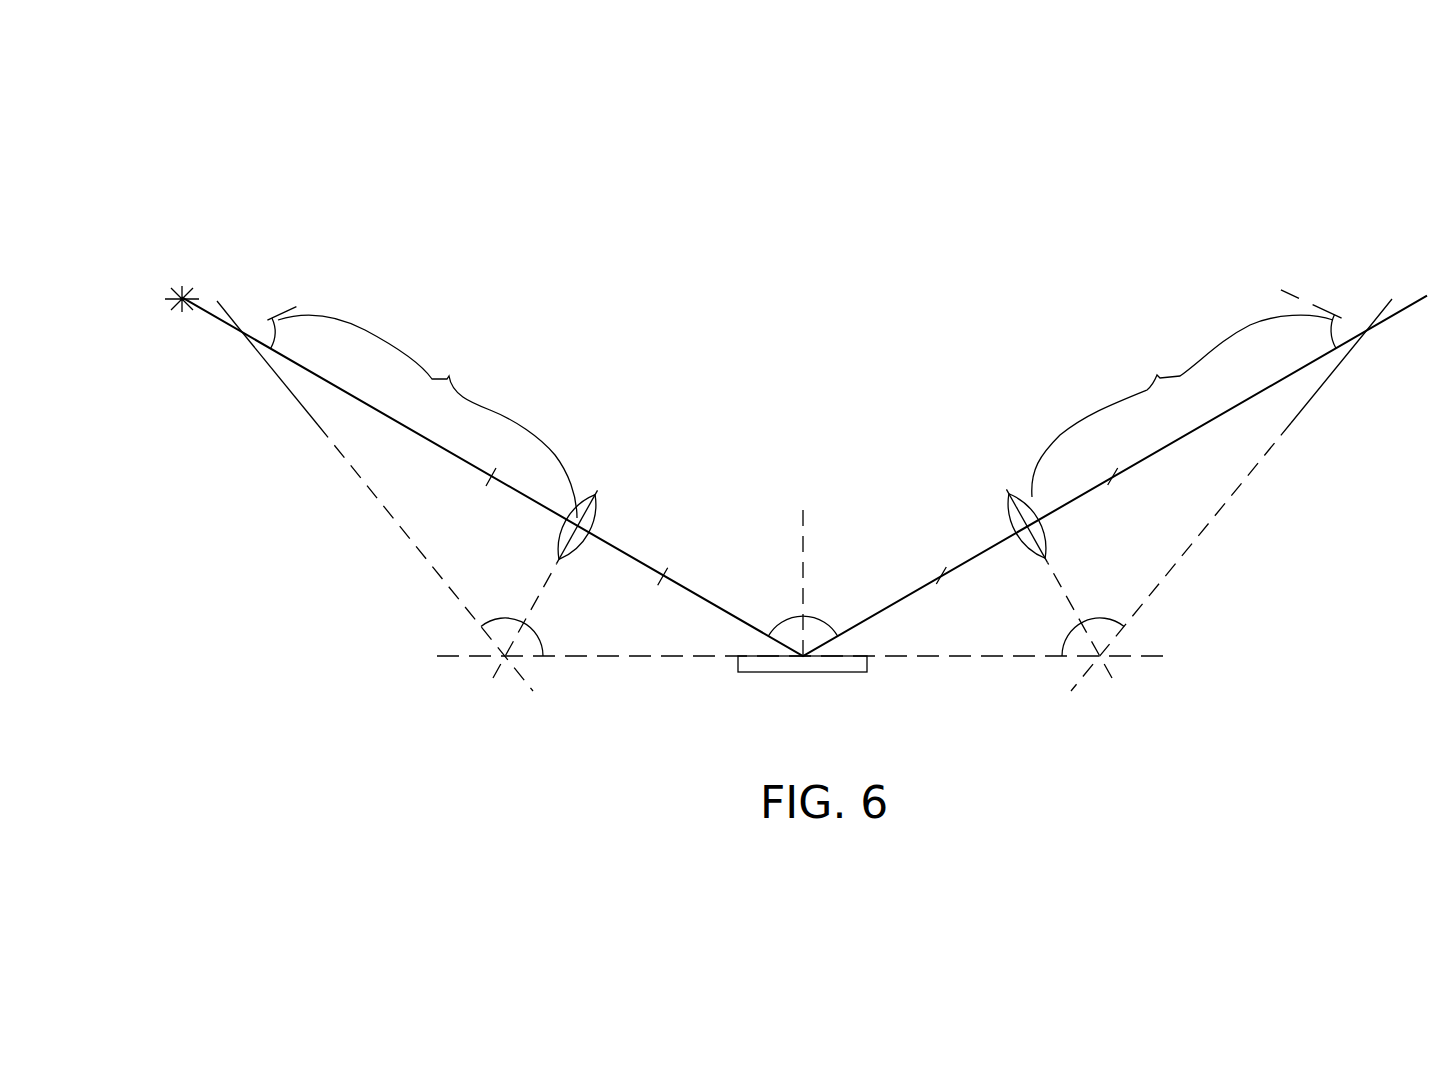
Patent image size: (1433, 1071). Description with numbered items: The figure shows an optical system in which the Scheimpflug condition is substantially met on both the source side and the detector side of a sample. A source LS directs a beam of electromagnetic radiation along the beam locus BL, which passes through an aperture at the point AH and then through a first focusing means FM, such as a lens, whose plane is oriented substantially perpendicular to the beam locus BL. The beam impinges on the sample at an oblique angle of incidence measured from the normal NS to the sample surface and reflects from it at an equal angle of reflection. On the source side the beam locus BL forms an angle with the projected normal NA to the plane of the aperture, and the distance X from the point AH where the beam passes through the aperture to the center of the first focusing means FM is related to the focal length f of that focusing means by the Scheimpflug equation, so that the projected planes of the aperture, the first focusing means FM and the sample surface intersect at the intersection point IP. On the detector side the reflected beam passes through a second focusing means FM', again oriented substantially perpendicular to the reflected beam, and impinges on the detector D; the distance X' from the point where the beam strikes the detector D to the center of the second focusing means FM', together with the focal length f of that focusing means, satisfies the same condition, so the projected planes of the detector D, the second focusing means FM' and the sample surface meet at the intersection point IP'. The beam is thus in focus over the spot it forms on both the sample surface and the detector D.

The source LS is at (184, 278).
The projected normal to the plane of the aperture NA is at (313, 300).
The beam of electromagnetic radiation BL is at (218, 322).
The aperture / beam vertex AH is at (237, 345).
The distance X is at (427, 416).
The focusing means FM is at (615, 555).
The focal length f is at (490, 480).
The normal to sample surface NS is at (805, 504).
The focusing member (lens) on detector side FM' is at (1029, 534).
The distance X' is at (1182, 406).
The detector D is at (1392, 296).
The intersection point IP is at (430, 578).
The intersection point on detector side IP' is at (1176, 581).